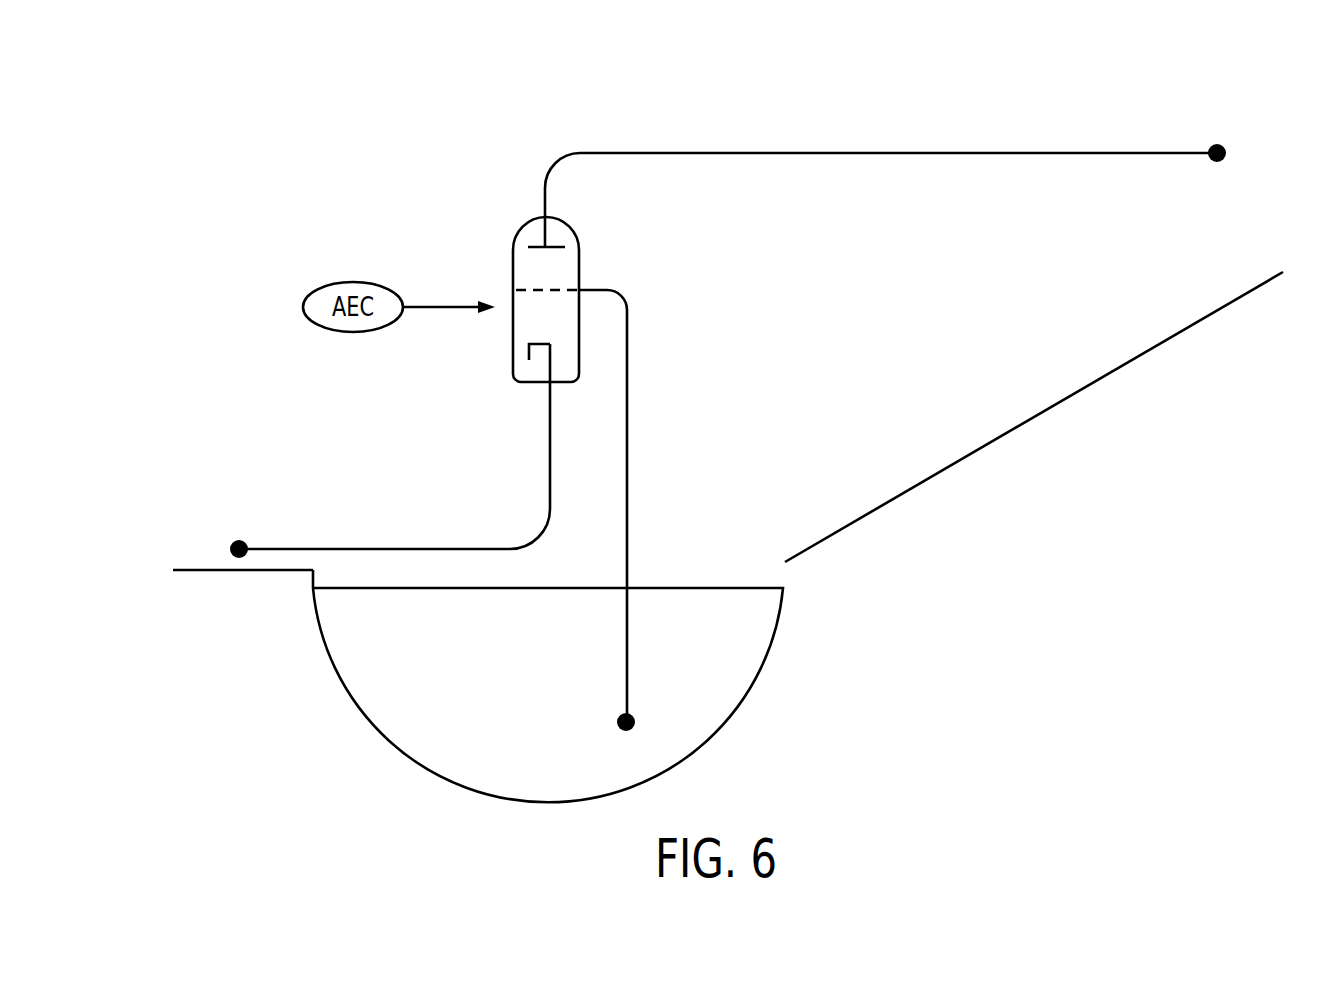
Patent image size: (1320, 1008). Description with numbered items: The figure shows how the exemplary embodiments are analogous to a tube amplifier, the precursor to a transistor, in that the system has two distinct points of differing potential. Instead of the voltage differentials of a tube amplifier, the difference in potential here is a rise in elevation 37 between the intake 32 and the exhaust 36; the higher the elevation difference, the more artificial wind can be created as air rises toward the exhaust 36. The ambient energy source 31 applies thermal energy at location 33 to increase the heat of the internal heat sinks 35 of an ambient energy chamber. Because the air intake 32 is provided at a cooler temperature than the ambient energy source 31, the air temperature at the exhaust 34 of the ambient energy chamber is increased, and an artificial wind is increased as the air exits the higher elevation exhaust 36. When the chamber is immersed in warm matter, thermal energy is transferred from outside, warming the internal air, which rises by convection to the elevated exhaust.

The ambient energy source 31 is at (490, 684).
The intake 32 is at (550, 412).
The location 33 is at (610, 290).
The exhaust of the ambient energy chamber 34 is at (545, 190).
The internal heat sinks 35 is at (532, 331).
The exhaust 36 is at (1220, 143).
The rise in elevation 37 is at (1070, 398).